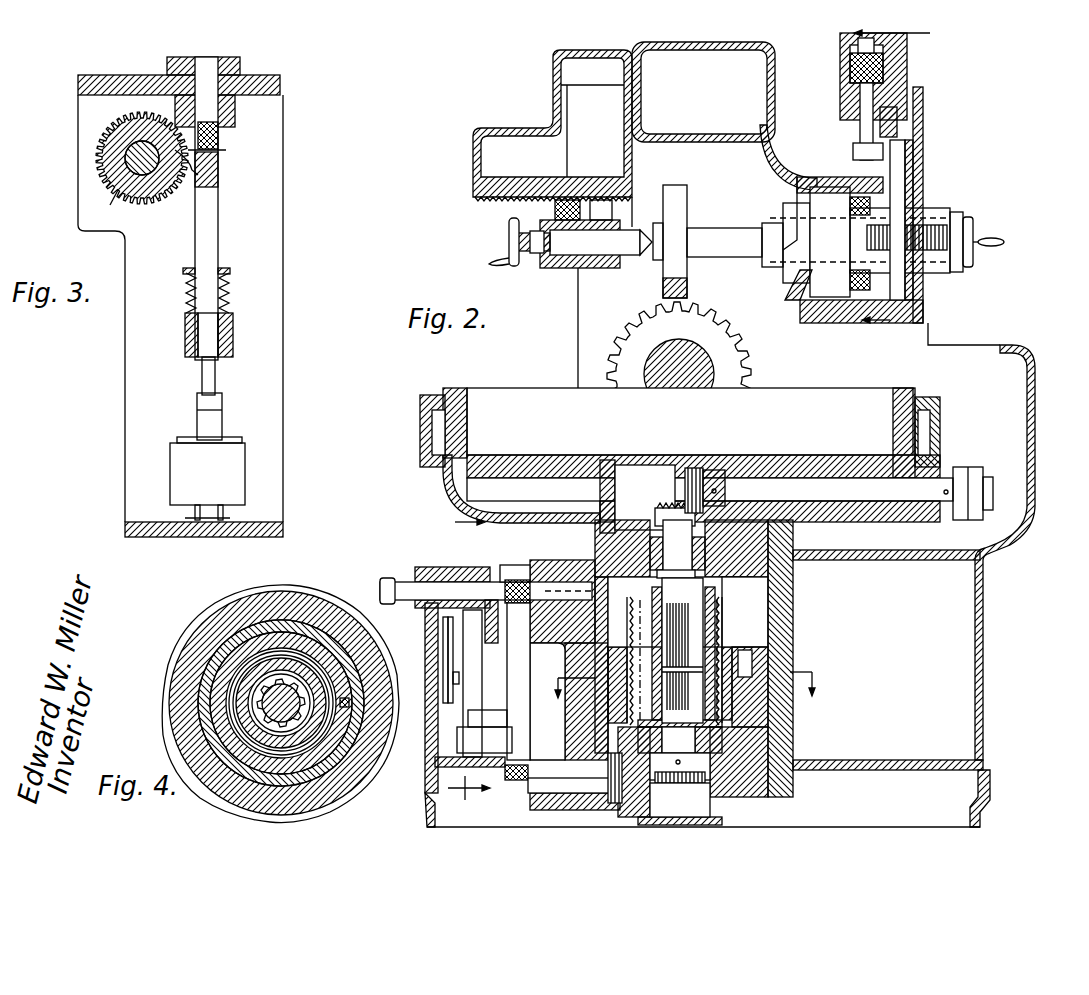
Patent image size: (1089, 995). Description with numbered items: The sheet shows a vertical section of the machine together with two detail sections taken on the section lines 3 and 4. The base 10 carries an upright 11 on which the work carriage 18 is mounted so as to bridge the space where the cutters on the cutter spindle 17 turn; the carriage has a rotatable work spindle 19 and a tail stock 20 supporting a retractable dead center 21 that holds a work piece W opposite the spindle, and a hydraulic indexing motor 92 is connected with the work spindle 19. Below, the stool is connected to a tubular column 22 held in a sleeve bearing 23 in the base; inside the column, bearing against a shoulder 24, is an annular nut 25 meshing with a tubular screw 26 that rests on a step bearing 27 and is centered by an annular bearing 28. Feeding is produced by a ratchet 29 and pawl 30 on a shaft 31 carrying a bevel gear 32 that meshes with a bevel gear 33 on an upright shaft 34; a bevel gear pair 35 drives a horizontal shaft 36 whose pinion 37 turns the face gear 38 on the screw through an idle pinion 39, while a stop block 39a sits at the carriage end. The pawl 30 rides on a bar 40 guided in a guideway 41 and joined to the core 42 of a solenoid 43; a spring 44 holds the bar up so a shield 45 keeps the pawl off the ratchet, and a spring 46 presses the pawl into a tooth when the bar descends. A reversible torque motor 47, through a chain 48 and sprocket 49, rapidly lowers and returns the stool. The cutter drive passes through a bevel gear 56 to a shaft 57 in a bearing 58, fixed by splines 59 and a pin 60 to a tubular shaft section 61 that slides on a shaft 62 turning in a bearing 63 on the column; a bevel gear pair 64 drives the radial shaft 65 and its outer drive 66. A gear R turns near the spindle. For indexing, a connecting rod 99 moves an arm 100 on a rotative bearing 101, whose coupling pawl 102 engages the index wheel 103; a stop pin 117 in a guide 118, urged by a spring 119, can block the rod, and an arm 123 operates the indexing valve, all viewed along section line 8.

In FIG. 3, the base 10 is at (262, 216).
In FIG. 2, the base 10 is at (957, 672).
In FIG. 2, the upright 11 is at (852, 398).
In FIG. 2, the cutter spindle 17 is at (690, 352).
In FIG. 2, the work carriage 18 is at (790, 130).
In FIG. 2, the work spindle 19 is at (785, 230).
In FIG. 2, the tail stock 20 is at (560, 268).
In FIG. 2, the dead center 21 is at (580, 252).
In FIG. 2, the tubular column 22 is at (767, 592).
In FIG. 4, the tubular column 22 is at (252, 628).
In FIG. 2, the sleeve bearing 23 is at (793, 650).
In FIG. 4, the sleeve bearing 23 is at (215, 625).
In FIG. 2, the shoulder 24 is at (752, 652).
In FIG. 2, the annular nut 25 is at (752, 707).
In FIG. 4, the annular nut 25 is at (232, 672).
In FIG. 2, the tubular screw 26 is at (636, 610).
In FIG. 4, the tubular screw 26 is at (236, 693).
In FIG. 2, the step bearing 27 is at (780, 795).
In FIG. 2, the annular bearing 28 is at (736, 797).
In FIG. 3, the ratchet 29 is at (98, 168).
In FIG. 2, the ratchet 29 is at (487, 540).
In FIG. 3, the pawl 30 is at (224, 153).
In FIG. 3, the shaft 31 is at (104, 204).
In FIG. 2, the shaft 31 is at (380, 588).
In FIG. 2, the bevel gear 32 is at (535, 548).
In FIG. 2, the bevel gear 33 is at (515, 605).
In FIG. 2, the upright shaft 34 is at (522, 678).
In FIG. 2, the bevel gear pair 35 is at (517, 782).
In FIG. 2, the horizontal shaft 36 is at (560, 793).
In FIG. 2, the pinion 37 is at (588, 797).
In FIG. 2, the face gear 38 is at (614, 750).
In FIG. 2, the idle pinion 39 is at (608, 762).
In FIG. 2, the stop block 39a is at (420, 415).
In FIG. 3, the bar 40 is at (212, 254).
In FIG. 3, the guideway 41 is at (232, 110).
In FIG. 3, the core 42 is at (212, 425).
In FIG. 3, the solenoid 43 is at (238, 480).
In FIG. 3, the spring 44 is at (226, 292).
In FIG. 3, the shield 45 is at (170, 200).
In FIG. 3, the spring 46 is at (222, 136).
In FIG. 2, the reversible electric torque motor 47 is at (470, 650).
In FIG. 2, the chain 48 is at (447, 672).
In FIG. 2, the sprocket 49 is at (418, 568).
In FIG. 2, the bevel gear 56 is at (696, 785).
In FIG. 2, the shaft 57 is at (686, 785).
In FIG. 2, the bearing 58 is at (664, 786).
In FIG. 2, the splines 59 is at (680, 700).
In FIG. 2, the pin 60 is at (660, 690).
In FIG. 2, the tubular shaft section 61 is at (708, 600).
In FIG. 4, the tubular shaft section 61 is at (255, 703).
In FIG. 2, the shaft 62 is at (677, 621).
In FIG. 4, the shaft 62 is at (255, 713).
In FIG. 2, the bearing 63 is at (643, 528).
In FIG. 2, the bevel gear pair 64 is at (688, 490).
In FIG. 2, the shaft 65 is at (792, 495).
In FIG. 2, the drive 66 is at (972, 467).
In FIG. 2, the hydraulic indexing motor 92 is at (832, 300).
In FIG. 2, the connecting rod 99 is at (853, 155).
In FIG. 2, the arm 100 is at (830, 242).
In FIG. 2, the rotative bearing 101 is at (916, 207).
In FIG. 2, the coupling pawl 102 is at (905, 150).
In FIG. 2, the index wheel 103 is at (910, 185).
In FIG. 2, the stop pin 117 is at (860, 115).
In FIG. 2, the guide 118 is at (842, 97).
In FIG. 2, the spring 119 is at (847, 69).
In FIG. 2, the arm 123 is at (897, 120).
In FIG. 2, the section line 3— 3 is at (466, 657).
In FIG. 2, the section line 4— 4 is at (684, 684).
In FIG. 2, the section line 8 is at (892, 189).
In FIG. 2, the rack gear R is at (640, 328).
In FIG. 2, the workpiece W is at (683, 220).